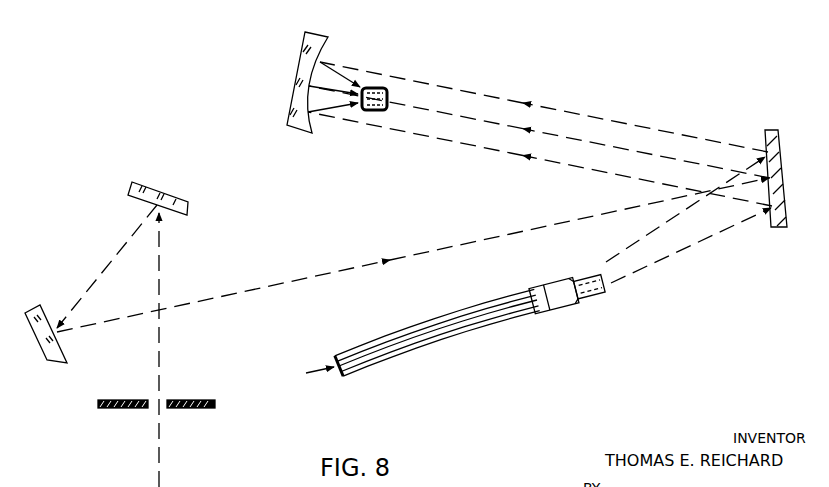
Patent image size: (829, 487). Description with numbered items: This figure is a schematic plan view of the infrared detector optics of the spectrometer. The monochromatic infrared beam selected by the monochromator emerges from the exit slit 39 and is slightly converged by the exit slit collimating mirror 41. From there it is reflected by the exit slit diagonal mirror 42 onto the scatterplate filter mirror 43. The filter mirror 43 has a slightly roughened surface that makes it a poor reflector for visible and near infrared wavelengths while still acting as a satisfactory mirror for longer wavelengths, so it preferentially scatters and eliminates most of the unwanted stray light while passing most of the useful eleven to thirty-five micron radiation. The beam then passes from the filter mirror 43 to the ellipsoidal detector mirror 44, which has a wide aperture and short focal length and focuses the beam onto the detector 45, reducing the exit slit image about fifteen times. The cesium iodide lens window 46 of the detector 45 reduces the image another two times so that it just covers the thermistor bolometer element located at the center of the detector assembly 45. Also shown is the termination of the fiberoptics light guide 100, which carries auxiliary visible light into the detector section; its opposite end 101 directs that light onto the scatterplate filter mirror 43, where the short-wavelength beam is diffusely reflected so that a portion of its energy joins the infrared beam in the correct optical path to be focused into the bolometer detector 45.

The exit slit 39 is at (183, 400).
The exit slit collimating mirror 41 is at (190, 210).
The exit slit diagonal mirror 42 is at (67, 366).
The scatterplate filter mirror 43 is at (768, 130).
The ellipsoidal detector mirror 44 is at (298, 72).
The detector 45 is at (378, 88).
The cesium iodide lens window 46 is at (366, 87).
The fiberoptics light guide 100 is at (410, 362).
The opposite end of the light guide 101 is at (602, 277).